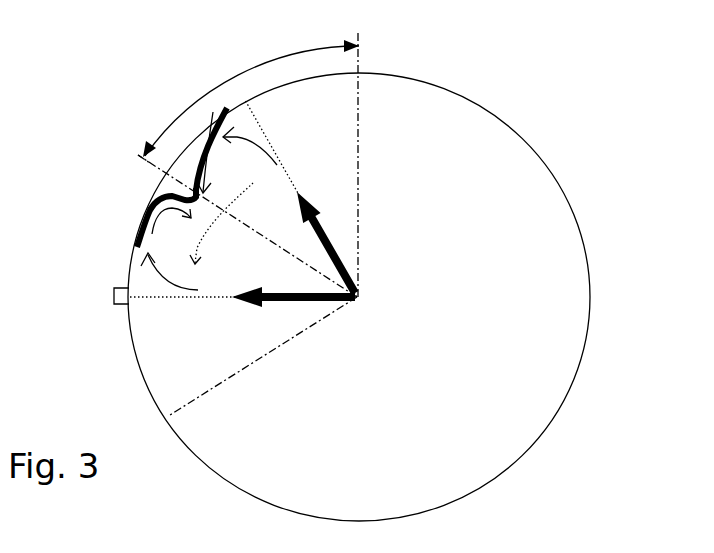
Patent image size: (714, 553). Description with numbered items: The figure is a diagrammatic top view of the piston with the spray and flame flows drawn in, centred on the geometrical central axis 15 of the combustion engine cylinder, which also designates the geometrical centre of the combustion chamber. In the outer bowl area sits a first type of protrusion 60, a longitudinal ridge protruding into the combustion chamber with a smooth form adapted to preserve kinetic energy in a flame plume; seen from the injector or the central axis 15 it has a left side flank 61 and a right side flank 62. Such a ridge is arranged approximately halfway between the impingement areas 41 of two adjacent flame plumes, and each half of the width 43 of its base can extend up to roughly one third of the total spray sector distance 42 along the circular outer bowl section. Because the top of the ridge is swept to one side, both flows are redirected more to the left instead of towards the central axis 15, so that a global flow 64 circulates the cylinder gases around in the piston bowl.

The geometrical central axis 15 is at (357, 290).
The impingement area 41 is at (113, 296).
The total spray sector distance 42 is at (270, 53).
The width of the base of the first type of protrusion 43 is at (148, 170).
The first type of protrusion 60 is at (168, 190).
The left side flank 61 is at (152, 204).
The right side flank 62 is at (200, 147).
The global flow 64 is at (221, 223).